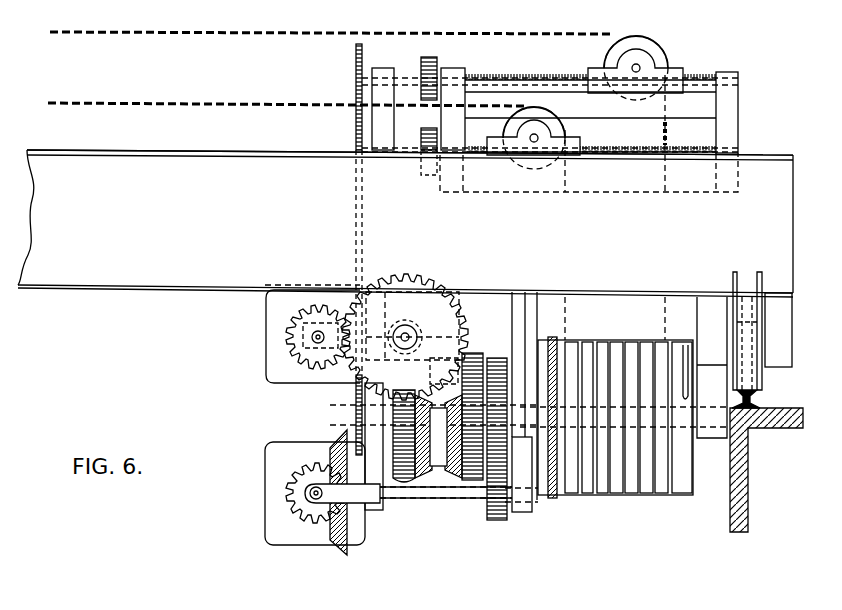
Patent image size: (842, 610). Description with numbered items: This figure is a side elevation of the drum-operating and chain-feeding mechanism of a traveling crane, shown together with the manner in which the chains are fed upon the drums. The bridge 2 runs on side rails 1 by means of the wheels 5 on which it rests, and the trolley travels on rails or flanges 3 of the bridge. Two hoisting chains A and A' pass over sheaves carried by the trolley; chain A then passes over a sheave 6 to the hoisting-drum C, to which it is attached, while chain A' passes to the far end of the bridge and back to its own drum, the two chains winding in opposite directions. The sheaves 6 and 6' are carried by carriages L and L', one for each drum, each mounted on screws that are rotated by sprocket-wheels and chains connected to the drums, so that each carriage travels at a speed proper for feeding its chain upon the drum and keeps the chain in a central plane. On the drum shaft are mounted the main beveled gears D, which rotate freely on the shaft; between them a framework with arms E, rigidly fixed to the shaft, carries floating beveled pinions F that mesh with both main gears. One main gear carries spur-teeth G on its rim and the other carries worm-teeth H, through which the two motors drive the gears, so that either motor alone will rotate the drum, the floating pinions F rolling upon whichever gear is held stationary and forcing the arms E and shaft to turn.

The chain A' is at (331, 21).
The chain A is at (287, 93).
The bridge 2 is at (405, 223).
The rails or flanges 3 is at (96, 151).
The sheave 6' is at (646, 64).
The sheave 6 is at (543, 133).
The carriage L is at (646, 70).
The carriage L' is at (546, 137).
The wheels 5 is at (747, 331).
The side rails 1 is at (752, 401).
The hoisting-drum C is at (615, 397).
The arms E is at (438, 437).
The beveled gear D is at (438, 443).
The worm-teeth H is at (400, 486).
The beveled pinions F is at (437, 492).
The spur-teeth G is at (468, 486).